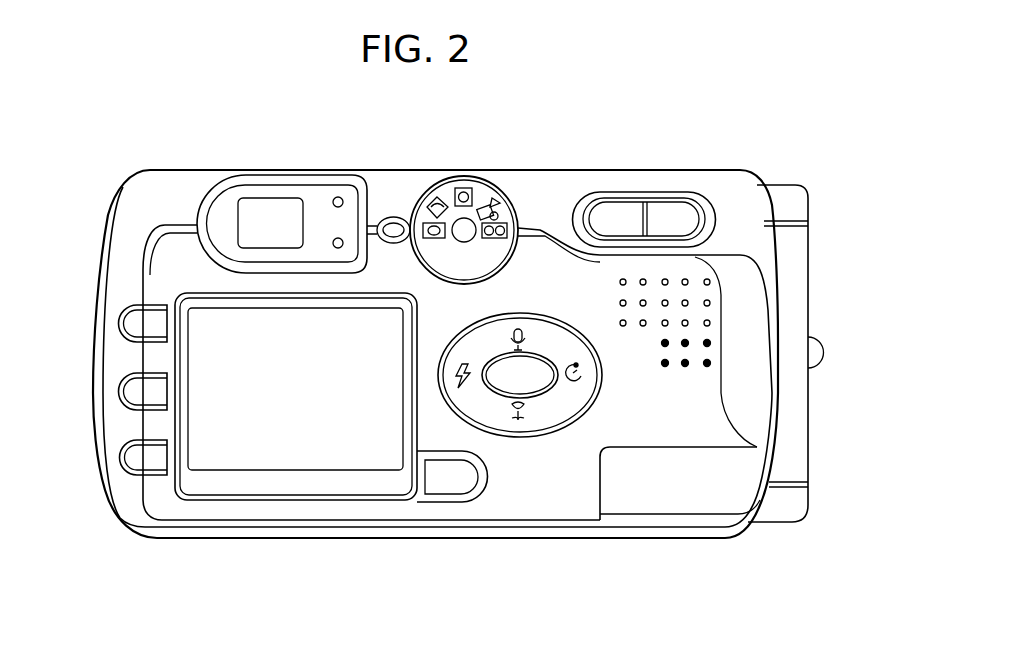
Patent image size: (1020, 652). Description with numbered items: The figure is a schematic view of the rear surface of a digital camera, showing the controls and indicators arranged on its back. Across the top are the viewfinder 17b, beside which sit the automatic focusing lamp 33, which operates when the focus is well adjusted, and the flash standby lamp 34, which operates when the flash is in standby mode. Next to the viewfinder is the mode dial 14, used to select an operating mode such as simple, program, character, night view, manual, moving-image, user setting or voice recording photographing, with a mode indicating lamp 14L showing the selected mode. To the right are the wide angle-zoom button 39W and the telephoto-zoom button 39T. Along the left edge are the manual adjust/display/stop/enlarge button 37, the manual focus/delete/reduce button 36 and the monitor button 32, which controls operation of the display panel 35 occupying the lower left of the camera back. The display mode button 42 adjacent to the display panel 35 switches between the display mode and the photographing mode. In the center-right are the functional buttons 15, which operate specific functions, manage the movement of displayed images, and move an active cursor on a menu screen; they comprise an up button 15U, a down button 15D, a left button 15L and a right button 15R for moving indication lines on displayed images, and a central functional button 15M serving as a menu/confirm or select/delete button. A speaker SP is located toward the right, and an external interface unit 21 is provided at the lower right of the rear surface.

The viewfinder 17b is at (270, 205).
The automatic focusing lamp 33 is at (334, 199).
The flash standby lamp 34 is at (344, 242).
The mode indicating lamp 14L is at (400, 218).
The mode dial 14 is at (473, 178).
The wide angle-zoom button 39W is at (611, 218).
The telephoto-zoom button 39T is at (678, 218).
The manual adjust/display/stop/enlarge button 37 is at (128, 325).
The manual focus/delete/reduce button 36 is at (128, 391).
The monitor button 32 is at (128, 457).
The display panel 35 is at (291, 447).
The display mode button 42 is at (443, 482).
The functional buttons 15 is at (552, 443).
The up button 15U is at (510, 333).
The left button 15L is at (457, 390).
The right button 15R is at (590, 375).
The central functional button 15M is at (543, 383).
The down button 15D is at (525, 412).
The speaker SP is at (710, 343).
The external interface unit 21 is at (720, 500).